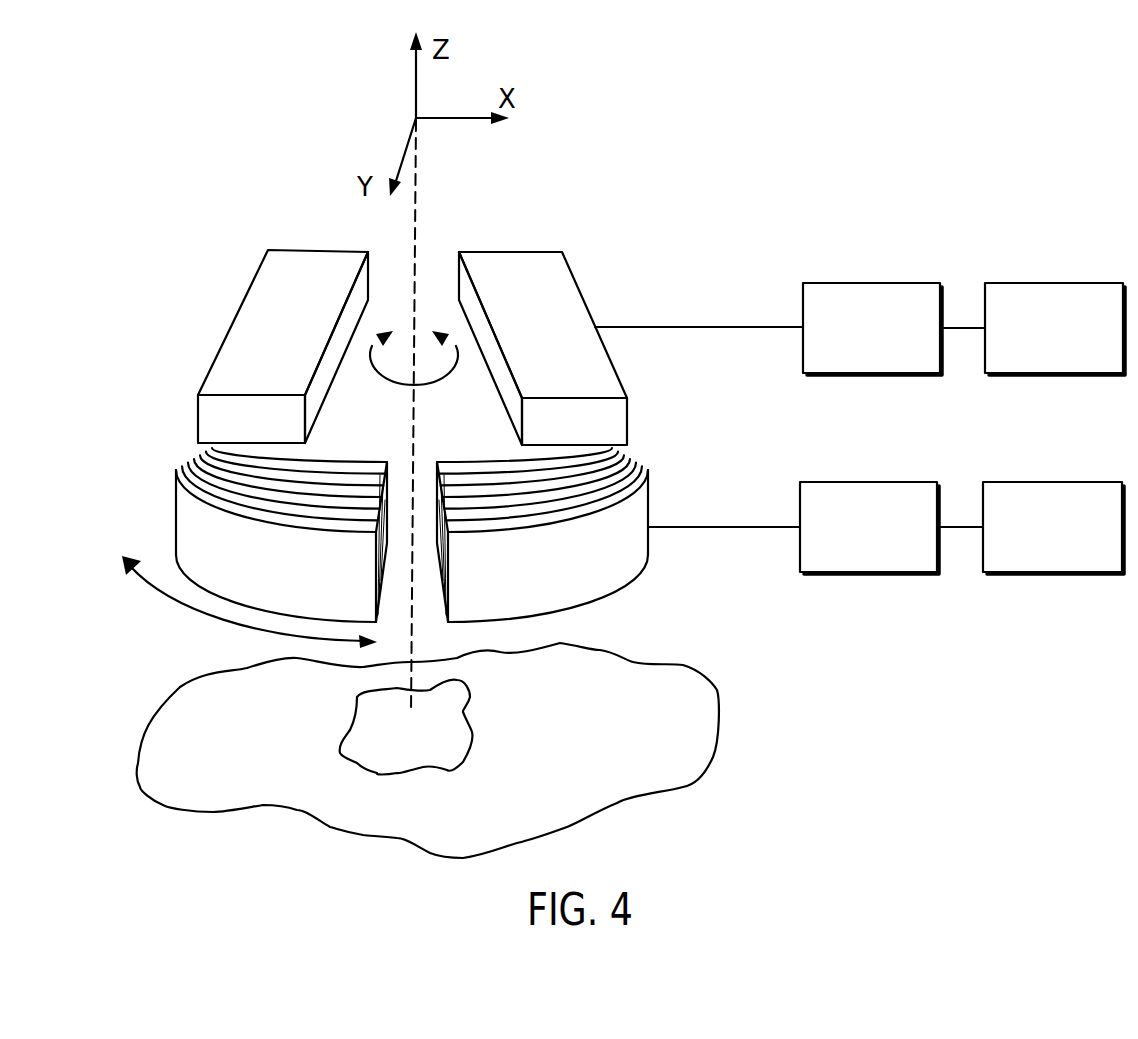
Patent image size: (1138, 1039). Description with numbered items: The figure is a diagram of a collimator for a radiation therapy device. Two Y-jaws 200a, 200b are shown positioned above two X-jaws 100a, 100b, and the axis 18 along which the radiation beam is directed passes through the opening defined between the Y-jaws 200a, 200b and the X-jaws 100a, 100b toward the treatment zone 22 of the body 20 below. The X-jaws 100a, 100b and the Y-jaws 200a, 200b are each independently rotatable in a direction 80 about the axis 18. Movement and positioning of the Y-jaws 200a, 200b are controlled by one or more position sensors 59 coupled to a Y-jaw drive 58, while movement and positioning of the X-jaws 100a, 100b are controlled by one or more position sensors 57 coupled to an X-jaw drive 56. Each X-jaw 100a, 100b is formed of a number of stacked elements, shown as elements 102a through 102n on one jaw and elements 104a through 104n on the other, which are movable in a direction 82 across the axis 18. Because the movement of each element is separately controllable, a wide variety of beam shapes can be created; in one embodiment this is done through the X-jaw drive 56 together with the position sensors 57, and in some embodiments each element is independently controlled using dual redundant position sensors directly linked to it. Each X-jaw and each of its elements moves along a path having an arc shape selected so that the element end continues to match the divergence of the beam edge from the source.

The axis 18 is at (418, 220).
The body 20 is at (697, 732).
The treatment zone 22 is at (443, 728).
The X-jaw drive 56 is at (1047, 576).
The position sensors 57 is at (876, 574).
The Y-jaw drive 58 is at (1048, 375).
The position sensors 59 is at (883, 375).
The direction 80 is at (393, 387).
The direction 82 is at (200, 614).
The X-jaw 100a is at (236, 518).
The X-jaw 100b is at (585, 518).
The element 102a is at (187, 467).
The element 102n is at (333, 462).
The element 104a is at (637, 470).
The element 104n is at (494, 463).
The Y-jaw 200a is at (274, 292).
The Y-jaw 200b is at (562, 285).